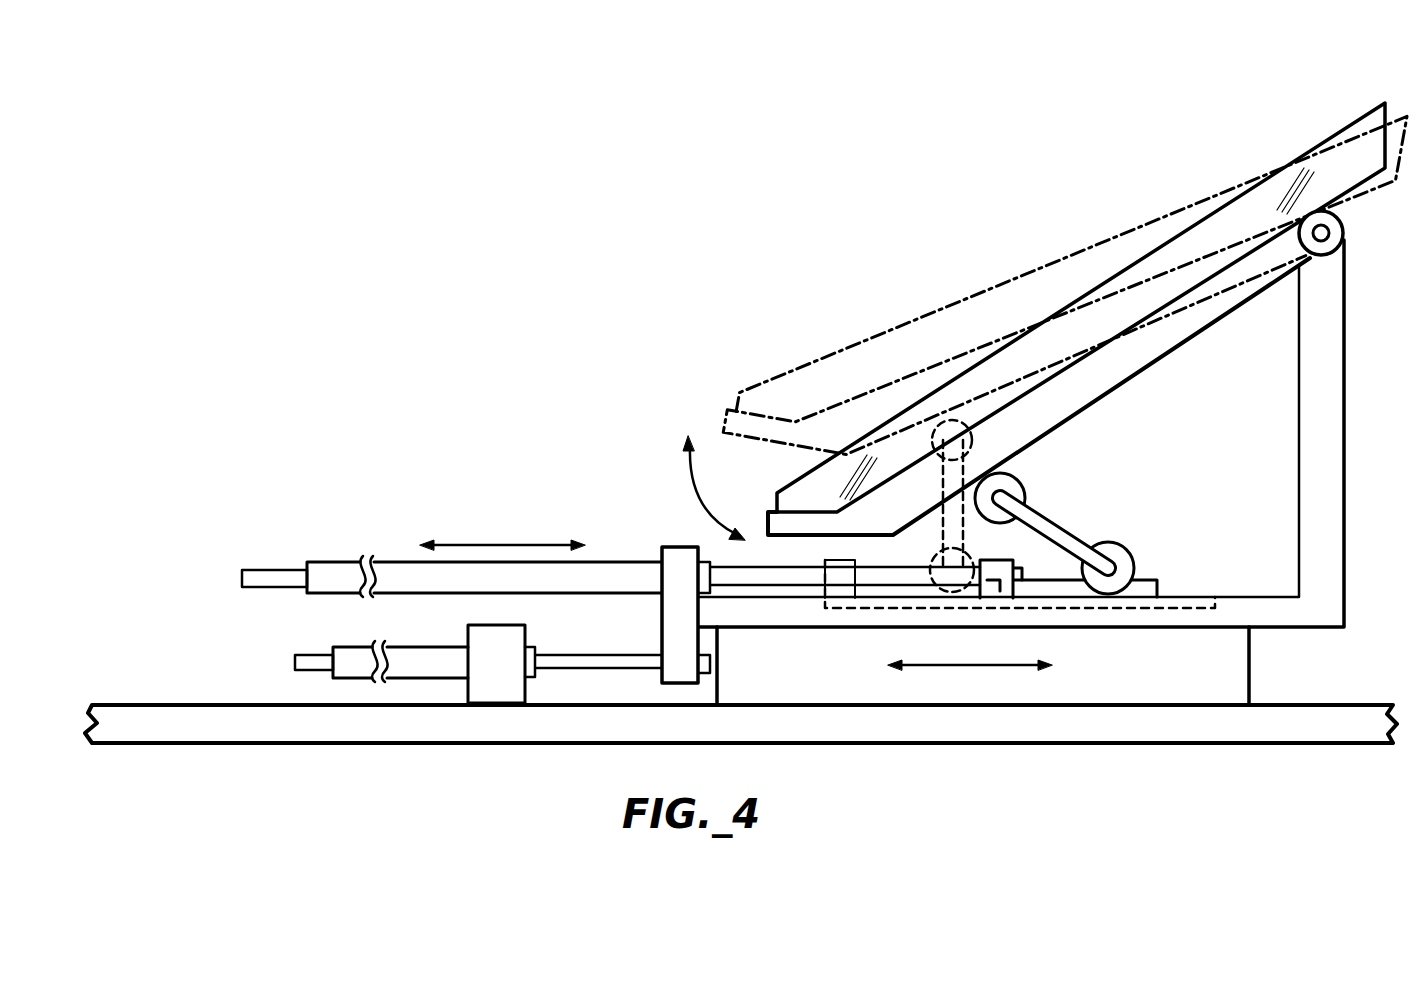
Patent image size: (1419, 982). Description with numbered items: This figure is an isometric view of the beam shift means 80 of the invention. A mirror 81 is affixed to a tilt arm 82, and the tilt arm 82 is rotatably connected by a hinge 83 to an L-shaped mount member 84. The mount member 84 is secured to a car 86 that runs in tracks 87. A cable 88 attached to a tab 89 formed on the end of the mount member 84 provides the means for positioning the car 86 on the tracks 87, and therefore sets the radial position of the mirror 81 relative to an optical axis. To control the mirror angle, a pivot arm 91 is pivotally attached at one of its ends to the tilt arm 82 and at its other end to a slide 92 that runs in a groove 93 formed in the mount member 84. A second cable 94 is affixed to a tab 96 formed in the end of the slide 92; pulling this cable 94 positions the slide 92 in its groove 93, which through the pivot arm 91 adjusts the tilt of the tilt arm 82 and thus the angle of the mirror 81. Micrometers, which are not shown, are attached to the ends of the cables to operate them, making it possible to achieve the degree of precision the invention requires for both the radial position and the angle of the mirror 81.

The shift means 80 is at (1032, 232).
The mirror 81 is at (1352, 122).
The tilt arm 82 is at (1208, 335).
The hinge 83 is at (1342, 224).
The mount member 84 is at (1344, 588).
The car 86 is at (1242, 673).
The tracks 87 is at (1305, 730).
The cable 88 is at (362, 647).
The tab 89 is at (660, 545).
The pivot arm 91 is at (1083, 532).
The slide 92 is at (1150, 578).
The groove 93 is at (1205, 597).
The cable 94 is at (337, 562).
The tab 96 is at (1010, 558).